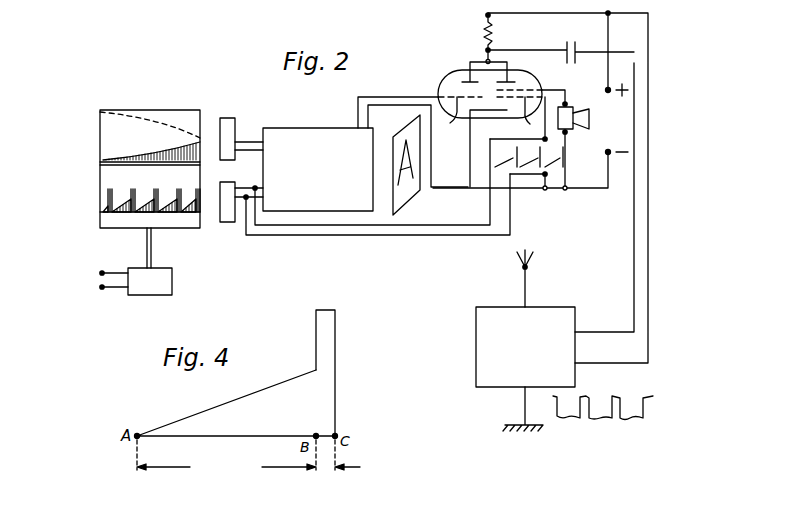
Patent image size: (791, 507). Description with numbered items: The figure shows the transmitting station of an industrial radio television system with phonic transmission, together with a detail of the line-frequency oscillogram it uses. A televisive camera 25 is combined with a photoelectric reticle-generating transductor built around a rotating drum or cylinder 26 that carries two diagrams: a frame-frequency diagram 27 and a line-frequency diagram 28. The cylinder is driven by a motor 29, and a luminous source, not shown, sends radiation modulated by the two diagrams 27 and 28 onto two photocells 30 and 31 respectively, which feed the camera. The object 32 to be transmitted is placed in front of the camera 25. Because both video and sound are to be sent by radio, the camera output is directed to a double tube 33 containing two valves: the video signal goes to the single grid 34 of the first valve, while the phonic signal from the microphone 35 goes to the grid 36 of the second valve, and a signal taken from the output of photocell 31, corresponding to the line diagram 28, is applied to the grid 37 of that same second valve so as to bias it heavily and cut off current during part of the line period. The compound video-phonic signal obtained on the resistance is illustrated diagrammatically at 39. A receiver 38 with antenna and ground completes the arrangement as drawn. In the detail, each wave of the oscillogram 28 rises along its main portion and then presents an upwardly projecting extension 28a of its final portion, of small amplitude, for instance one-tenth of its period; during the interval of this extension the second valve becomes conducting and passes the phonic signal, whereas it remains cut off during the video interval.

In FIG. 2, the televisive camera 25 is at (311, 135).
In FIG. 2, the rotating drum or cylinder 26 is at (112, 176).
In FIG. 2, the frame-frequency diagram 27 is at (157, 152).
In FIG. 2, the line-frequency diagram 28 is at (105, 208).
In FIG. 4, the line-frequency diagram 28 is at (222, 413).
In FIG. 4, the upwardly projecting extension 28a is at (320, 343).
In FIG. 2, the motor 29 is at (165, 283).
In FIG. 2, the photocell 30 is at (233, 122).
In FIG. 2, the photocell 31 is at (228, 215).
In FIG. 2, the object to be transmitted 32 is at (405, 198).
In FIG. 2, the double tube 33 is at (453, 79).
In FIG. 2, the grid 34 is at (450, 117).
In FIG. 2, the microphone 35 is at (567, 112).
In FIG. 2, the grid 36 is at (530, 89).
In FIG. 2, the grid 37 is at (530, 117).
In FIG. 2, the radio receiver 38 is at (558, 318).
In FIG. 2, the compound video-phonic signal 39 is at (571, 270).